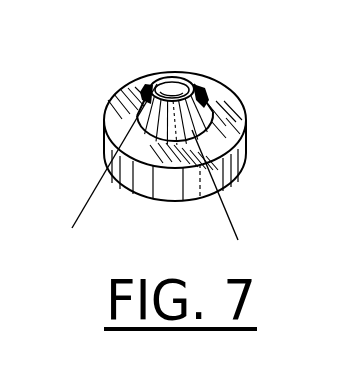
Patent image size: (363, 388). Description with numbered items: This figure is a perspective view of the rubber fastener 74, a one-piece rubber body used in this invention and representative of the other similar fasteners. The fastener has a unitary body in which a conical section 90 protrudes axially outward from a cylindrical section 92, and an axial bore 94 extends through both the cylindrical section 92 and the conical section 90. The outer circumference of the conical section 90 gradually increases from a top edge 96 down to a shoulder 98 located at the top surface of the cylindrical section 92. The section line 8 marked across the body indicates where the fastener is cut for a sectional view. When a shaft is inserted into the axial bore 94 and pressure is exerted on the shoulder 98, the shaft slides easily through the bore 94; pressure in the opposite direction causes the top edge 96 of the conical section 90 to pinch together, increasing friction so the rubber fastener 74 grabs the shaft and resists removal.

The rubber fastener 74 is at (122, 83).
The conical section 90 is at (200, 102).
The cylindrical section 92 is at (240, 161).
The axial bore 94 is at (165, 78).
The top edge 96 is at (185, 78).
The shoulder 98 is at (222, 87).
The section line 8- 8 is at (280, 222).